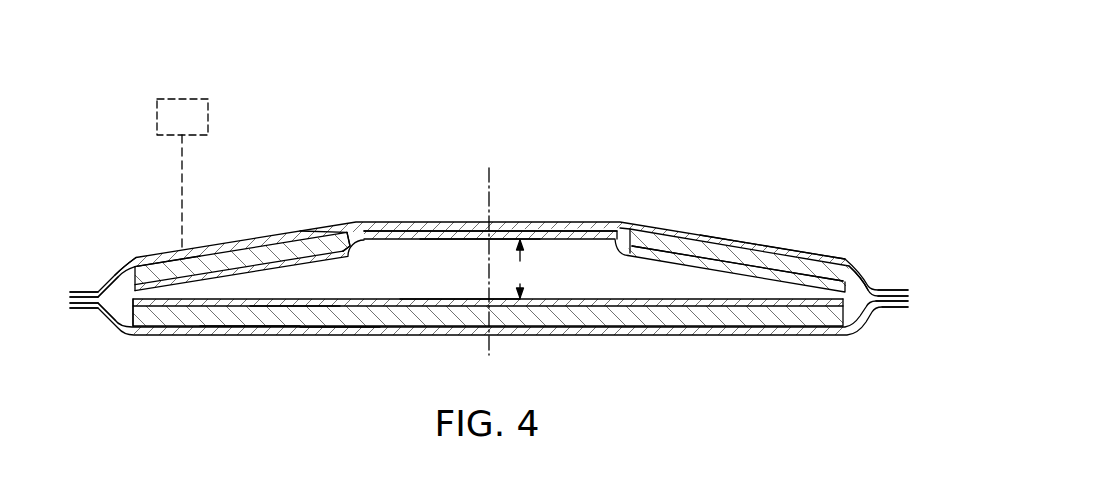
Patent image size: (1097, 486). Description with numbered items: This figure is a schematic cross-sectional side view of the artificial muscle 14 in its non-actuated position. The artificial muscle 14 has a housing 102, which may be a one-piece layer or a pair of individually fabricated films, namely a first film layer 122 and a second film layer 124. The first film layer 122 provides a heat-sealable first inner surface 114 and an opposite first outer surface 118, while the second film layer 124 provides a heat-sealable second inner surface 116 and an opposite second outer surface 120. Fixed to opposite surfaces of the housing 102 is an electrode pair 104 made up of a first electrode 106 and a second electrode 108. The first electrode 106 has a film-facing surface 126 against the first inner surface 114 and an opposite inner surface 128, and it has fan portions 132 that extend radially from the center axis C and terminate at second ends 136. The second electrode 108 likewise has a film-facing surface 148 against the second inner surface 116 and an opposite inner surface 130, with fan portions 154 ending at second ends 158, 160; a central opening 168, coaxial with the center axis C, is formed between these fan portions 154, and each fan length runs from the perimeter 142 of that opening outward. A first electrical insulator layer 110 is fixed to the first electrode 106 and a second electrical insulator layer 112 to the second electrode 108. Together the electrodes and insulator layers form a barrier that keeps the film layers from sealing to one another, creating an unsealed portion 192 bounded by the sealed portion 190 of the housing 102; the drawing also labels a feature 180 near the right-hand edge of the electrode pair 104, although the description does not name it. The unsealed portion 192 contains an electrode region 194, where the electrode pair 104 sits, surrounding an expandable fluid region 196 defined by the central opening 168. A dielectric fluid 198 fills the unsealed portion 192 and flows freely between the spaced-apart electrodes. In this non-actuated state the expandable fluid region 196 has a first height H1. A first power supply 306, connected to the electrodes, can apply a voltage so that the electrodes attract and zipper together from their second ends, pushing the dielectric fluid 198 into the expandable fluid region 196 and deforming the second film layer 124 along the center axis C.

The artificial muscle 14 is at (783, 100).
The housing 102 is at (100, 207).
The electrode pair 104 is at (753, 357).
The first electrode 106 is at (713, 318).
The second electrode 108 is at (768, 264).
The first electrical insulator layer 110 is at (466, 294).
The second electrical insulator layer 112 is at (479, 242).
The first inner surface 114 is at (122, 310).
The second inner surface 116 is at (122, 286).
The first outer surface 118 is at (72, 310).
The second outer surface 120 is at (73, 291).
The first film layer 122 is at (391, 337).
The second film layer 124 is at (398, 208).
The film-facing surface 126 is at (292, 322).
The inner surface 128 is at (252, 320).
The inner surface 130 is at (319, 240).
The fan portions 132 is at (334, 318).
The second end 136 is at (145, 309).
The perimeter 142 is at (352, 240).
The film-facing surface 148 is at (232, 267).
The fan portions 154 is at (321, 226).
The second end 158 is at (142, 269).
The second end 160 is at (133, 273).
The central opening 168 is at (451, 224).
The right cover bend 180 is at (856, 287).
The sealed portion 190 is at (916, 300).
The unsealed portion 192 is at (812, 247).
The electrode region 194 is at (745, 238).
The expandable fluid region 196 is at (557, 232).
The dielectric fluid 198 is at (568, 297).
The first power supply 306 is at (185, 99).
The center axis C is at (489, 172).
The first height H1 is at (522, 269).